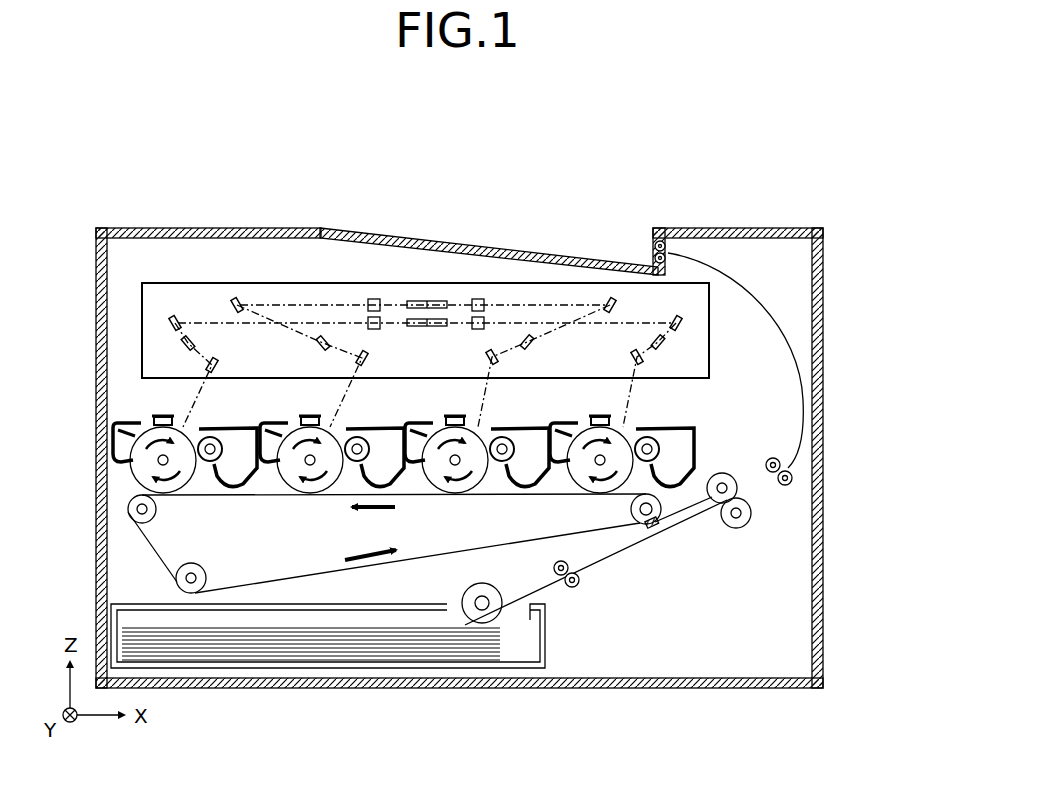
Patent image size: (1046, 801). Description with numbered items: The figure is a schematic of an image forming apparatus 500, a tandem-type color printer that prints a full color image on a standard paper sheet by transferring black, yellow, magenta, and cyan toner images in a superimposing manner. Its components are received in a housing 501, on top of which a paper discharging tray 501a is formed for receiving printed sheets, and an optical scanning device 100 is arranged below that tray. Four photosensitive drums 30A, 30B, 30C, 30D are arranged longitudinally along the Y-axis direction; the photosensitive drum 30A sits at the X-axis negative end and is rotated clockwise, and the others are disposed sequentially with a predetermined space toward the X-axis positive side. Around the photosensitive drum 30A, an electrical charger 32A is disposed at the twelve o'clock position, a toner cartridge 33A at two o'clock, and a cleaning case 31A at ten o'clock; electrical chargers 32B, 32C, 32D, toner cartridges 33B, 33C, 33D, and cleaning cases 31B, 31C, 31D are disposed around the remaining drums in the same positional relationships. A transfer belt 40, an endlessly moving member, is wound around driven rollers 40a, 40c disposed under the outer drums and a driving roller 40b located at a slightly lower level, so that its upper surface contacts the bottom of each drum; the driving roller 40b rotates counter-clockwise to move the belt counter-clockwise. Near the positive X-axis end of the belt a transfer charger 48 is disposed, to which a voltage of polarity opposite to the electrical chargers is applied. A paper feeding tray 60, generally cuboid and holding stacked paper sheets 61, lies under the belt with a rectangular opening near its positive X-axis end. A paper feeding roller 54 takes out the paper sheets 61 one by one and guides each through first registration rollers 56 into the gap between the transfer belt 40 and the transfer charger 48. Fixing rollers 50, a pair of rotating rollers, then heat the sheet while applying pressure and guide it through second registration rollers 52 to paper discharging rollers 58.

The image forming apparatus 500 is at (676, 134).
The housing 501 is at (270, 228).
The paper discharging tray 501a is at (520, 246).
The paper discharging rollers 58 is at (650, 226).
The optical scanning device 100 is at (444, 281).
The photosensitive drum 30A is at (195, 487).
The photosensitive drum 30B is at (328, 490).
The photosensitive drum 30C is at (472, 490).
The photosensitive drum 30D is at (623, 495).
The cleaning case 31A is at (118, 436).
The cleaning case 31B is at (267, 465).
The cleaning case 31C is at (413, 468).
The cleaning case 31D is at (555, 468).
The electrical charger 32A is at (163, 415).
The electrical charger 32B is at (310, 415).
The electrical charger 32C is at (455, 415).
The electrical charger 32D is at (600, 415).
The toner cartridge 33A is at (235, 428).
The toner cartridge 33B is at (380, 428).
The toner cartridge 33C is at (525, 428).
The toner cartridge 33D is at (668, 428).
The transfer belt 40 is at (158, 548).
The driven roller 40a is at (152, 522).
The driving roller 40b is at (208, 578).
The driven roller 40c is at (660, 515).
The transfer charger 48 is at (657, 530).
The fixing rollers 50 is at (745, 527).
The second registration rollers 52 is at (745, 489).
The paper feeding roller 54 is at (466, 588).
The first registration rollers 56 is at (576, 586).
The paper feeding tray 60 is at (548, 645).
The paper sheets 61 is at (803, 400).